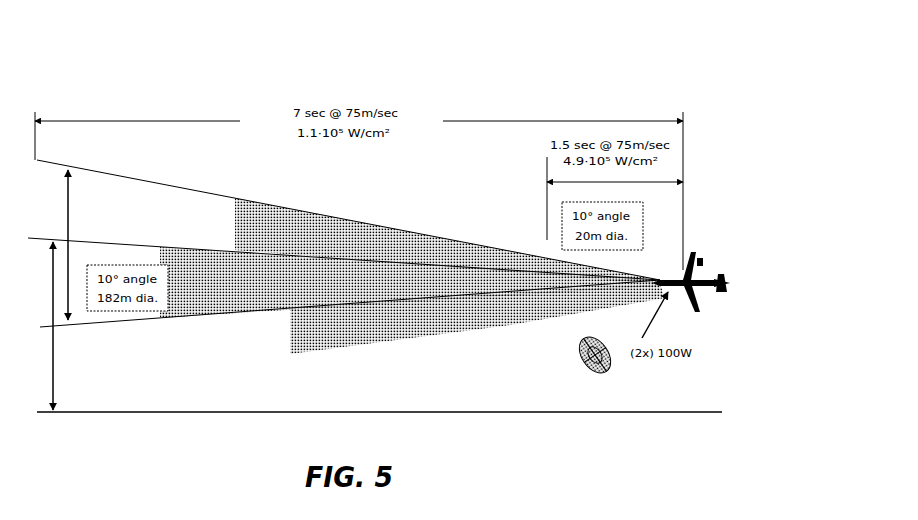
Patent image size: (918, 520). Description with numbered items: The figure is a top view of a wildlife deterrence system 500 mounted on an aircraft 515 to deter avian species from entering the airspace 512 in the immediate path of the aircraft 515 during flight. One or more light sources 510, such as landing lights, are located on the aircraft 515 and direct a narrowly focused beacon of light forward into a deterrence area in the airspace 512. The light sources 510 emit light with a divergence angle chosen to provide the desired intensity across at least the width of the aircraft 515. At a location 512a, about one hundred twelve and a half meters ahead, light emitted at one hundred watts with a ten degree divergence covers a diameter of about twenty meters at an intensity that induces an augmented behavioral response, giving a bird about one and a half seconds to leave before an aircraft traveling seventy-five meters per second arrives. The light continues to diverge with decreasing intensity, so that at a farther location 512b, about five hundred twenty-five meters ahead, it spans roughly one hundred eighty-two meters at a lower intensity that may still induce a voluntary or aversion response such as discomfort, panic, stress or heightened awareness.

The wildlife deterrence system 500 is at (583, 59).
The light source 510 is at (713, 311).
The airspace 512 is at (477, 334).
The location about 112.5 m in front of the aircraft 512a is at (344, 241).
The location about 525 m in front of the aircraft 512b is at (348, 231).
The aircraft 515 is at (762, 192).